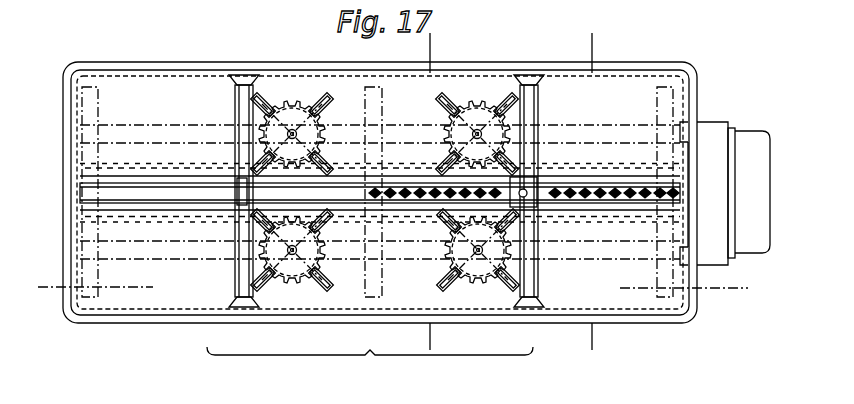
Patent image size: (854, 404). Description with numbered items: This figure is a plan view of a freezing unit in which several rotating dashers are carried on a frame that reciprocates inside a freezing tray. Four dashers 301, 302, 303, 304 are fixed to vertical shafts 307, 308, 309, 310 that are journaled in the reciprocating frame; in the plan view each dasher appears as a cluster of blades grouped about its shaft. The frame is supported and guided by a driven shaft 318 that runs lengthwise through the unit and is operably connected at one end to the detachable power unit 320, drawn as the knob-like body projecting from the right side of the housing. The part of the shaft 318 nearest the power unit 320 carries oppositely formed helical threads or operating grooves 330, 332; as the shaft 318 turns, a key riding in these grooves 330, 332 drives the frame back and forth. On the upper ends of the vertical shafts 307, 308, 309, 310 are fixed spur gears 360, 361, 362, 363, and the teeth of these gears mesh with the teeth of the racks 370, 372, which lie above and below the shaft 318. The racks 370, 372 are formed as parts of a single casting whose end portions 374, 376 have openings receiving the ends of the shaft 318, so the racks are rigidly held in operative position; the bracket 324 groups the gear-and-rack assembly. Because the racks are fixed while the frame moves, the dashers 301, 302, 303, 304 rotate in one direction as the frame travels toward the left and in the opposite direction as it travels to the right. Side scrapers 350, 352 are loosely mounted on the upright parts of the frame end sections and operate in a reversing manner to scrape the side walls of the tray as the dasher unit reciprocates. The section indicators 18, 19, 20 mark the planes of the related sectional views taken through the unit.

The driven shaft 318 is at (165, 190).
The spur gear 360 is at (283, 97).
The spur gear 361 is at (488, 103).
The side scraper 350 is at (534, 76).
The side scraper 352 is at (536, 323).
The spur gear 362 is at (490, 278).
The spur gear 363 is at (257, 258).
The dasher 301 is at (312, 105).
The dasher 302 is at (452, 106).
The dasher 303 is at (285, 272).
The dasher 304 is at (468, 272).
The vertical shaft 307 is at (300, 133).
The vertical shaft 308 is at (322, 258).
The vertical shaft 309 is at (447, 256).
The vertical shaft 310 is at (450, 121).
The rack 370 is at (210, 163).
The rack 372 is at (195, 218).
The end portion 374 is at (80, 187).
The helical operating groove 330 is at (572, 190).
The helical operating groove 332 is at (590, 180).
The end portion 376 is at (690, 172).
The detachable power unit 320 is at (745, 254).
The gear train assembly 324 is at (370, 352).
The section line 18 is at (48, 289).
The section line 19 is at (428, 45).
The section line 20 is at (594, 45).